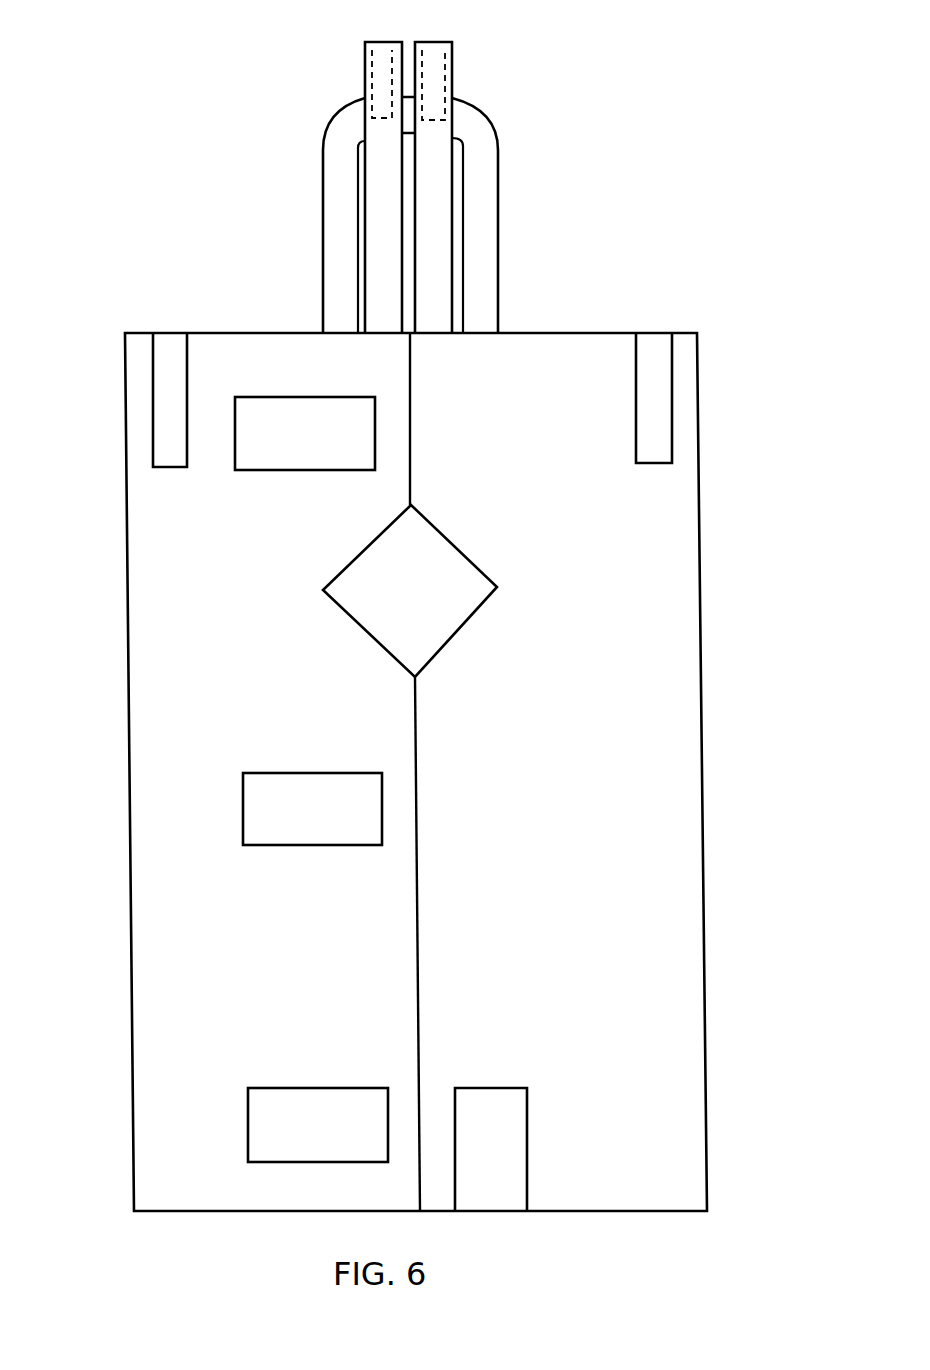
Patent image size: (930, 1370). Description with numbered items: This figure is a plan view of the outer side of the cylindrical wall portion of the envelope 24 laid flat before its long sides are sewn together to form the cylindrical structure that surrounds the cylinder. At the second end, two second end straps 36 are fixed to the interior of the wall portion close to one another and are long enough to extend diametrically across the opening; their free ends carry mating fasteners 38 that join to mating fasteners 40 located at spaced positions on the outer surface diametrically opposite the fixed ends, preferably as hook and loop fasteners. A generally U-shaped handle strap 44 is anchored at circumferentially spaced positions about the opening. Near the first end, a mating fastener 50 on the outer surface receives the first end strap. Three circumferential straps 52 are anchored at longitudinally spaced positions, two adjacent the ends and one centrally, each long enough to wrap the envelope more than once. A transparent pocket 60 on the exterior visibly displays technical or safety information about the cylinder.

The envelope 24 is at (668, 602).
The second end straps 36 is at (367, 72).
The mating fasteners 38 is at (373, 55).
The mating fasteners 40 is at (163, 433).
The handle strap 44 is at (493, 187).
The mating fastener 50 is at (527, 1163).
The circumferential straps 52 is at (283, 395).
The transparent pocket 60 is at (475, 613).